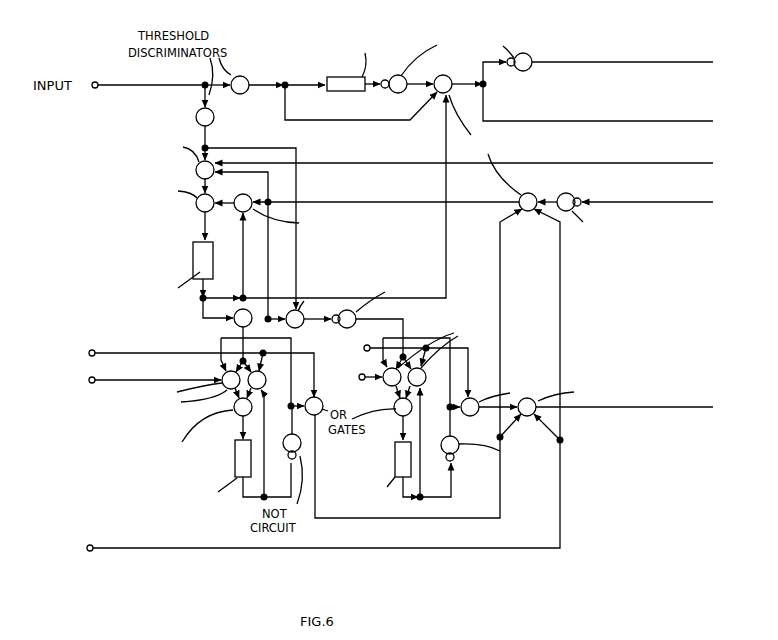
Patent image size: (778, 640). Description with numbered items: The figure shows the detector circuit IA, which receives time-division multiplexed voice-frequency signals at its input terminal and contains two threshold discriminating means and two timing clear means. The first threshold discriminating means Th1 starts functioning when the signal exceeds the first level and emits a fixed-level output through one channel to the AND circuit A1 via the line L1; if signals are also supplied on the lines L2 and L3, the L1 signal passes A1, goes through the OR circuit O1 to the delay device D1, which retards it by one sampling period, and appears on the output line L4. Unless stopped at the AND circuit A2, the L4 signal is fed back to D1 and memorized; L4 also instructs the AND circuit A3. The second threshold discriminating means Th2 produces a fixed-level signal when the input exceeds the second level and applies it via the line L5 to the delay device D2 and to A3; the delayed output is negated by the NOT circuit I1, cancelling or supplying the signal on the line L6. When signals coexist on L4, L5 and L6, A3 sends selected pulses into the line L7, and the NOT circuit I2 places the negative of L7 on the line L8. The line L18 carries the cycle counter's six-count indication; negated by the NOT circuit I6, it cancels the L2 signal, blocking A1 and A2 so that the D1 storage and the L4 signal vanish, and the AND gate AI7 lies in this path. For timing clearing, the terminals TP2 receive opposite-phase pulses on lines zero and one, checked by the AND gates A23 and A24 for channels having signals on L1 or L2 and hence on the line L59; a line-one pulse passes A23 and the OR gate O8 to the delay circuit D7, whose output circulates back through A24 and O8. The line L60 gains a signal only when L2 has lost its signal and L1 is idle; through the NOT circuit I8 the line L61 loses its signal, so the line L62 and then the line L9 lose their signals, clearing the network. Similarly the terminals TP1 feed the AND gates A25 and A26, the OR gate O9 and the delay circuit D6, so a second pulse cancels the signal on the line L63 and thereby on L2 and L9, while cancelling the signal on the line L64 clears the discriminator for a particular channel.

The first threshold discriminating means Th1 is at (182, 107).
The second threshold discriminating means Th2 is at (232, 78).
The line L1 is at (237, 148).
The line L2 is at (328, 204).
The line L3 is at (327, 163).
The output line L4 is at (215, 335).
The line L5 is at (343, 93).
The line L6 is at (420, 75).
The line L7 is at (598, 102).
The line L8 is at (622, 54).
The line L9 is at (596, 409).
The line L18 is at (647, 193).
The line L59 is at (342, 265).
The line L60 is at (396, 342).
The line L61 is at (494, 400).
The line L62 is at (432, 372).
The line L63 is at (418, 373).
The line L64 is at (338, 380).
The AND circuit A1 is at (158, 160).
The AND circuit A2 is at (287, 238).
The AND circuit A3 is at (460, 74).
The AND gate AI7 is at (494, 153).
The AND gate A23 is at (422, 352).
The AND gate A24 is at (428, 432).
The AND gate A25 is at (185, 392).
The AND gate A26 is at (269, 434).
The OR circuit O1 is at (162, 196).
The OR gate O8 is at (393, 405).
The OR gate O9 is at (201, 423).
The delay device D1 is at (165, 254).
The delay device D2 is at (325, 56).
The delay circuit D6 is at (217, 458).
The delay circuit D7 is at (389, 458).
The NOT circuit I1 is at (426, 54).
The NOT circuit I2 is at (507, 60).
The NOT circuit I6 is at (598, 204).
The NOT circuit I8 is at (495, 442).
The terminals TP1 is at (182, 365).
The terminals TP2 is at (354, 362).
The detector circuit IA is at (346, 575).